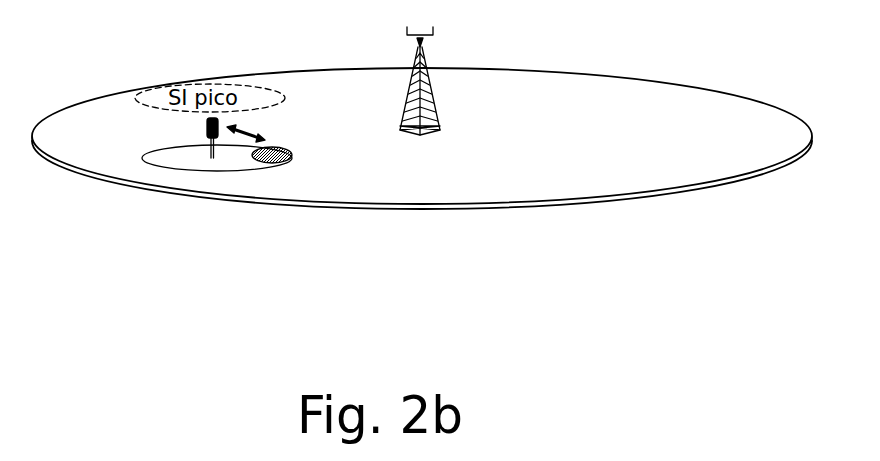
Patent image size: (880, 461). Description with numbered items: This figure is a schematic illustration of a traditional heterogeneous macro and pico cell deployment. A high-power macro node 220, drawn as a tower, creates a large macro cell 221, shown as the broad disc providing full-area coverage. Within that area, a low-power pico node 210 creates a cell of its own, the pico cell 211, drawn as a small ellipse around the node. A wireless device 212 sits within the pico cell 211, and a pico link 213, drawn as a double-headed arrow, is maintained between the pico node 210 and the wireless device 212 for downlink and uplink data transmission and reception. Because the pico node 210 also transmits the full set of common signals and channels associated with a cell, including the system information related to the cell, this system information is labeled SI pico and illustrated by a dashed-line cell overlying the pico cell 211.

The pico node 210 is at (205, 128).
The pico cell 211 is at (142, 162).
The wireless device 212 is at (272, 161).
The pico link 213 is at (243, 133).
The macro node 220 is at (430, 138).
The macro cell 221 is at (645, 187).